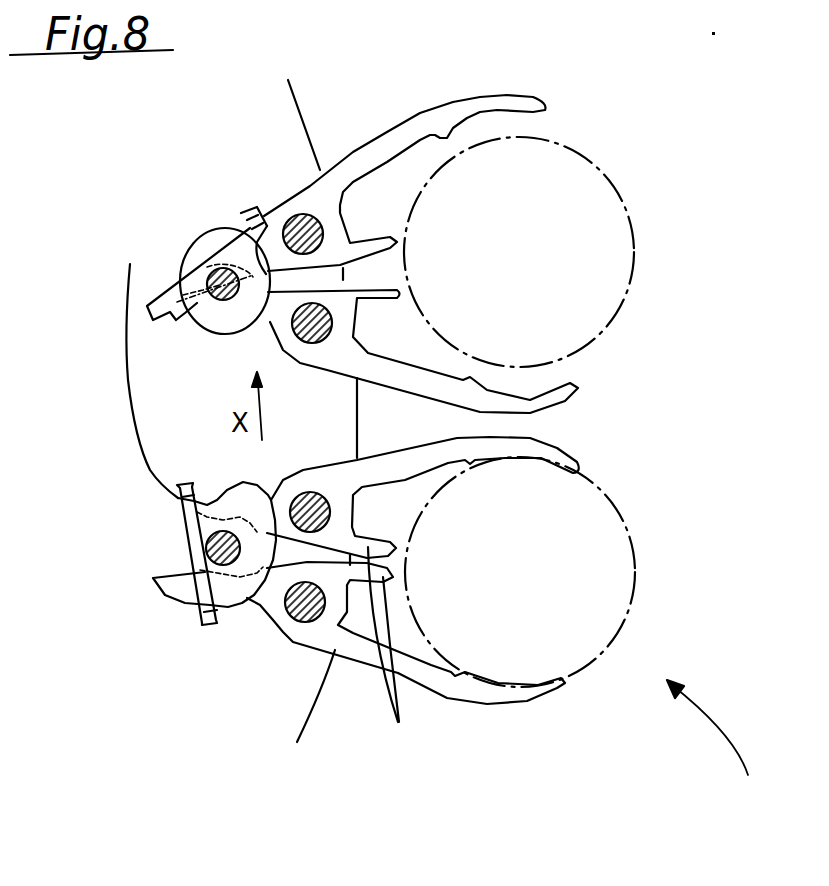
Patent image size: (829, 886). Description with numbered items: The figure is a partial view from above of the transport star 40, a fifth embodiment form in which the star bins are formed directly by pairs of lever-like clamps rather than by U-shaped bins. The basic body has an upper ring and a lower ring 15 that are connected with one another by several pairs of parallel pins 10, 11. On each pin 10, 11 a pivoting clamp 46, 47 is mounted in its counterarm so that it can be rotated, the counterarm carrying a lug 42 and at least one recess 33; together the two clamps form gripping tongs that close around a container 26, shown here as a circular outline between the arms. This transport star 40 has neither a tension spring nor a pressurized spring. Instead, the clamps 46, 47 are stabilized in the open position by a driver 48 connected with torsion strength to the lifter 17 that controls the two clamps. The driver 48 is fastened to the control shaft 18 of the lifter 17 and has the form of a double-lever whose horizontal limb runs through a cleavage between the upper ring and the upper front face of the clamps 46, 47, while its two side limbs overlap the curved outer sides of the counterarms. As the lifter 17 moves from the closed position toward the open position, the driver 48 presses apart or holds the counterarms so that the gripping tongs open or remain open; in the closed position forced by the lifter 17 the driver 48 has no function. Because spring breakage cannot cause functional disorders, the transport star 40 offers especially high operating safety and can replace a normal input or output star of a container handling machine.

The lower ring 15 is at (287, 137).
The clamp 46 is at (496, 106).
The clamp 47 is at (537, 403).
The pin 11 is at (295, 220).
The pin 10 is at (313, 340).
The tube 26 is at (637, 245).
The lifter 17 is at (188, 282).
The control shaft 18 is at (202, 555).
The recess 33 is at (237, 263).
The driver 48 is at (172, 285).
The lug 42 is at (391, 652).
The transport star 40 is at (697, 885).